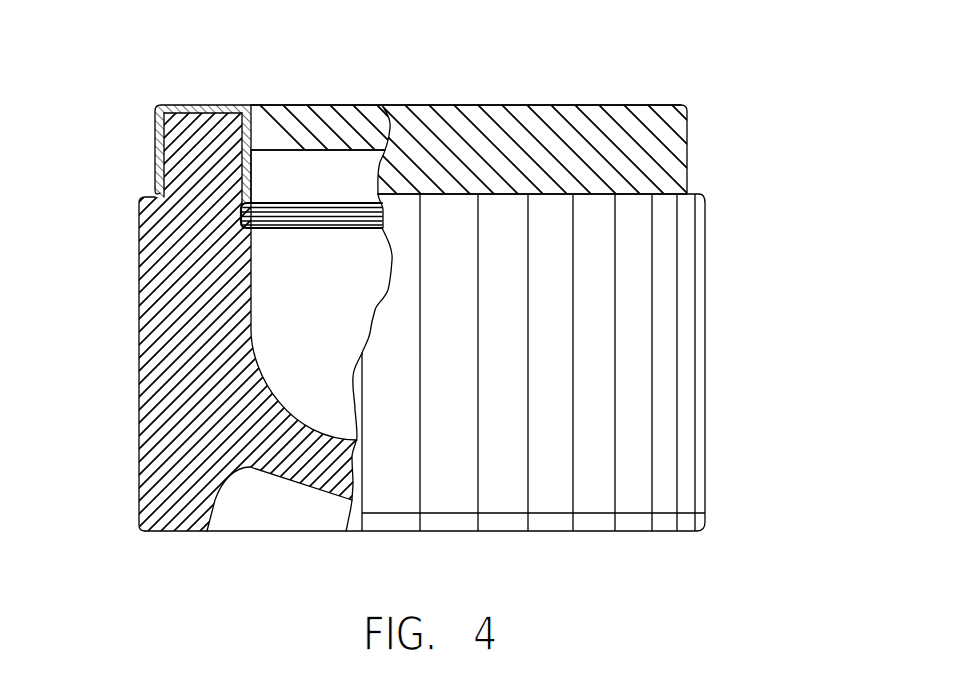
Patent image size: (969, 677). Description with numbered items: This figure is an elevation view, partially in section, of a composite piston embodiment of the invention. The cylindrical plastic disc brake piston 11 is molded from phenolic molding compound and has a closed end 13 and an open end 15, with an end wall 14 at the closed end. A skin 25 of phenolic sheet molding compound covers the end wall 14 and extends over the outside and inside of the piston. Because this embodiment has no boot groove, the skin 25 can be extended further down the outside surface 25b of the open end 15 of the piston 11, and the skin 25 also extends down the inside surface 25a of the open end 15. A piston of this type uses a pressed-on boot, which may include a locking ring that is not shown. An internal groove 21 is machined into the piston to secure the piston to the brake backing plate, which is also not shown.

The piston 11 is at (705, 420).
The closed end 13 is at (305, 485).
The end wall 14 is at (350, 105).
The open end 15 is at (335, 192).
The internal groove 21 is at (297, 229).
The skin 25 is at (660, 100).
The inside surface 25a is at (292, 112).
The outside surface 25b is at (665, 135).